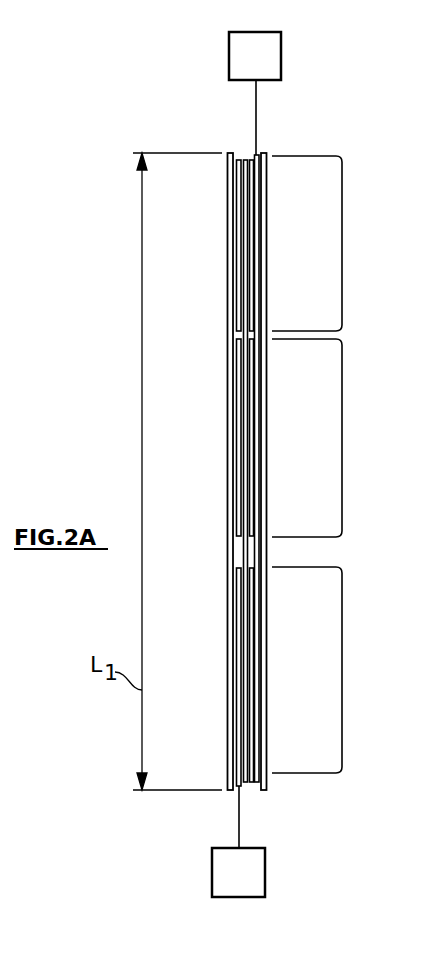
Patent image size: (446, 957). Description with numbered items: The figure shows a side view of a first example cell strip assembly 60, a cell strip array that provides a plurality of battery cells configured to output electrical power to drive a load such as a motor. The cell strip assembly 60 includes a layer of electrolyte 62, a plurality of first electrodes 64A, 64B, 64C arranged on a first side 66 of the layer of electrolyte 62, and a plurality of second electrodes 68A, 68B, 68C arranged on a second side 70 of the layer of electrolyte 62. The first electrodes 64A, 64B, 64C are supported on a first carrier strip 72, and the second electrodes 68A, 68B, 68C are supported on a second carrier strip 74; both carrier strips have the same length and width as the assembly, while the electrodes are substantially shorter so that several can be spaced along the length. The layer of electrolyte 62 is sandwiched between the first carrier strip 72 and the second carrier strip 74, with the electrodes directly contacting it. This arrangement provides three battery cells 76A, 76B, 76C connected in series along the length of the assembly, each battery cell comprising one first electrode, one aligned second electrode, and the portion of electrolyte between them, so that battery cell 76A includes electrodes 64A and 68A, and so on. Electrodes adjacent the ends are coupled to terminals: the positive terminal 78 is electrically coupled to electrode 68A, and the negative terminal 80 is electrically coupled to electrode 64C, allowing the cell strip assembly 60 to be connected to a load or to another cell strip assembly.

The cell strip assembly 60 is at (362, 71).
The layer of electrolyte 62 is at (249, 471).
The first electrode 64A is at (236, 233).
The first electrode 64B is at (236, 406).
The first electrode 64C is at (236, 661).
The first side 66 is at (243, 313).
The second electrode 68A is at (254, 283).
The second electrode 68B is at (254, 415).
The second electrode 68C is at (254, 645).
The second side 70 is at (259, 605).
The first carrier strip 72 is at (228, 173).
The second carrier strip 74 is at (266, 175).
The battery cell 76A is at (342, 248).
The battery cell 76B is at (342, 428).
The battery cell 76C is at (342, 655).
The positive terminal 78 is at (281, 51).
The negative terminal 80 is at (212, 868).